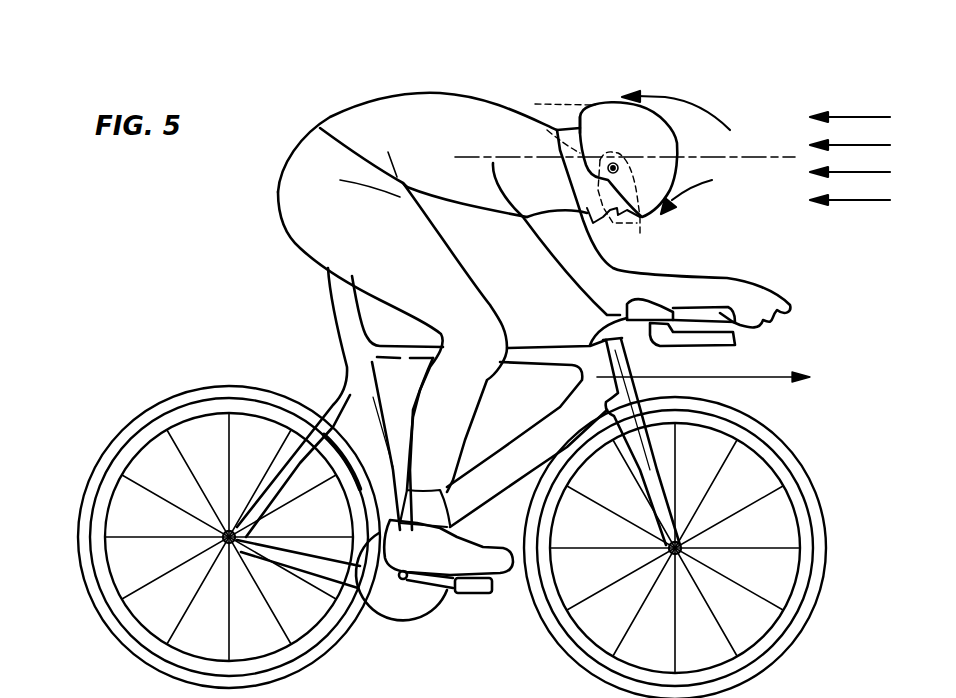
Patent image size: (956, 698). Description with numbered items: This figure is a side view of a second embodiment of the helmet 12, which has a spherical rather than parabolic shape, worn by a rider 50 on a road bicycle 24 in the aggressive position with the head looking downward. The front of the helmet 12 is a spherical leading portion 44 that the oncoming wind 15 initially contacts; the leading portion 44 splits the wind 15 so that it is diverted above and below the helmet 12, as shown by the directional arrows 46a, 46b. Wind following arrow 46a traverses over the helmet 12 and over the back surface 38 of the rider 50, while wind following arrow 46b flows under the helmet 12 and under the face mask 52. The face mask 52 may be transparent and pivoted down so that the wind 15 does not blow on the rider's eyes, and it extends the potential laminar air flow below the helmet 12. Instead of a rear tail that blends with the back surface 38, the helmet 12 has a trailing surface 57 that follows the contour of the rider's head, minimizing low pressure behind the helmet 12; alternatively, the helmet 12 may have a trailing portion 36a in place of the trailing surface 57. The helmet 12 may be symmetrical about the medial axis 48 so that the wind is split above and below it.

The helmet 12 is at (598, 84).
The wind 15 is at (857, 117).
The road bicycle 24 is at (843, 438).
The trailing portion 36a is at (547, 130).
The back surface 38 is at (424, 88).
The leading portion 44 is at (680, 162).
The directional arrow 46a is at (676, 101).
The directional arrow 46b is at (684, 194).
The medial axis 48 is at (747, 157).
The rider 50 is at (373, 113).
The face mask 52 is at (640, 237).
The trailing surface 57 is at (580, 118).